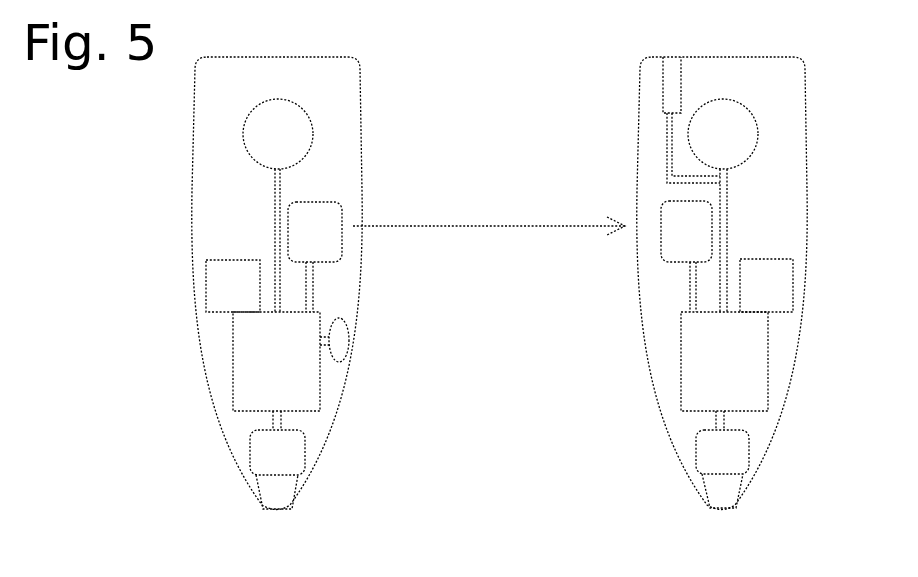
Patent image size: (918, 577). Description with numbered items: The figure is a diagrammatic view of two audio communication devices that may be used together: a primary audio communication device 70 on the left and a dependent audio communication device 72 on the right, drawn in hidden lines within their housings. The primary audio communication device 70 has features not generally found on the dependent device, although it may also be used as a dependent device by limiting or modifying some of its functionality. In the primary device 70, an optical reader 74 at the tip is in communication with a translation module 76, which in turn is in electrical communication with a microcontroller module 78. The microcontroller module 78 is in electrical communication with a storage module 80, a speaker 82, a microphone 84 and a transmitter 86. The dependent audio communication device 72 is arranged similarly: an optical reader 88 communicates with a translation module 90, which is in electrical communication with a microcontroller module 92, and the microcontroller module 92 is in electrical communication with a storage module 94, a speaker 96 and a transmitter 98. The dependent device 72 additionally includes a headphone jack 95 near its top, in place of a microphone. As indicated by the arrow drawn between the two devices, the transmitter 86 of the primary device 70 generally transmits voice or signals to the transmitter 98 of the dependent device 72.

The primary audio communication device 70 is at (146, 466).
The dependent audio communication device 72 is at (619, 466).
The optical reader 74 is at (282, 494).
The translation module 76 is at (287, 461).
The microcontroller module 78 is at (262, 356).
The storage module 80 is at (231, 292).
The speaker 82 is at (280, 135).
The microphone 84 is at (337, 350).
The transmitter 86 is at (321, 216).
The optical reader 88 is at (722, 494).
The translation module 90 is at (722, 450).
The microcontroller module 92 is at (747, 387).
The storage module 94 is at (765, 287).
The headphone jack 95 is at (673, 92).
The speaker 96 is at (735, 133).
The transmitter 98 is at (682, 222).